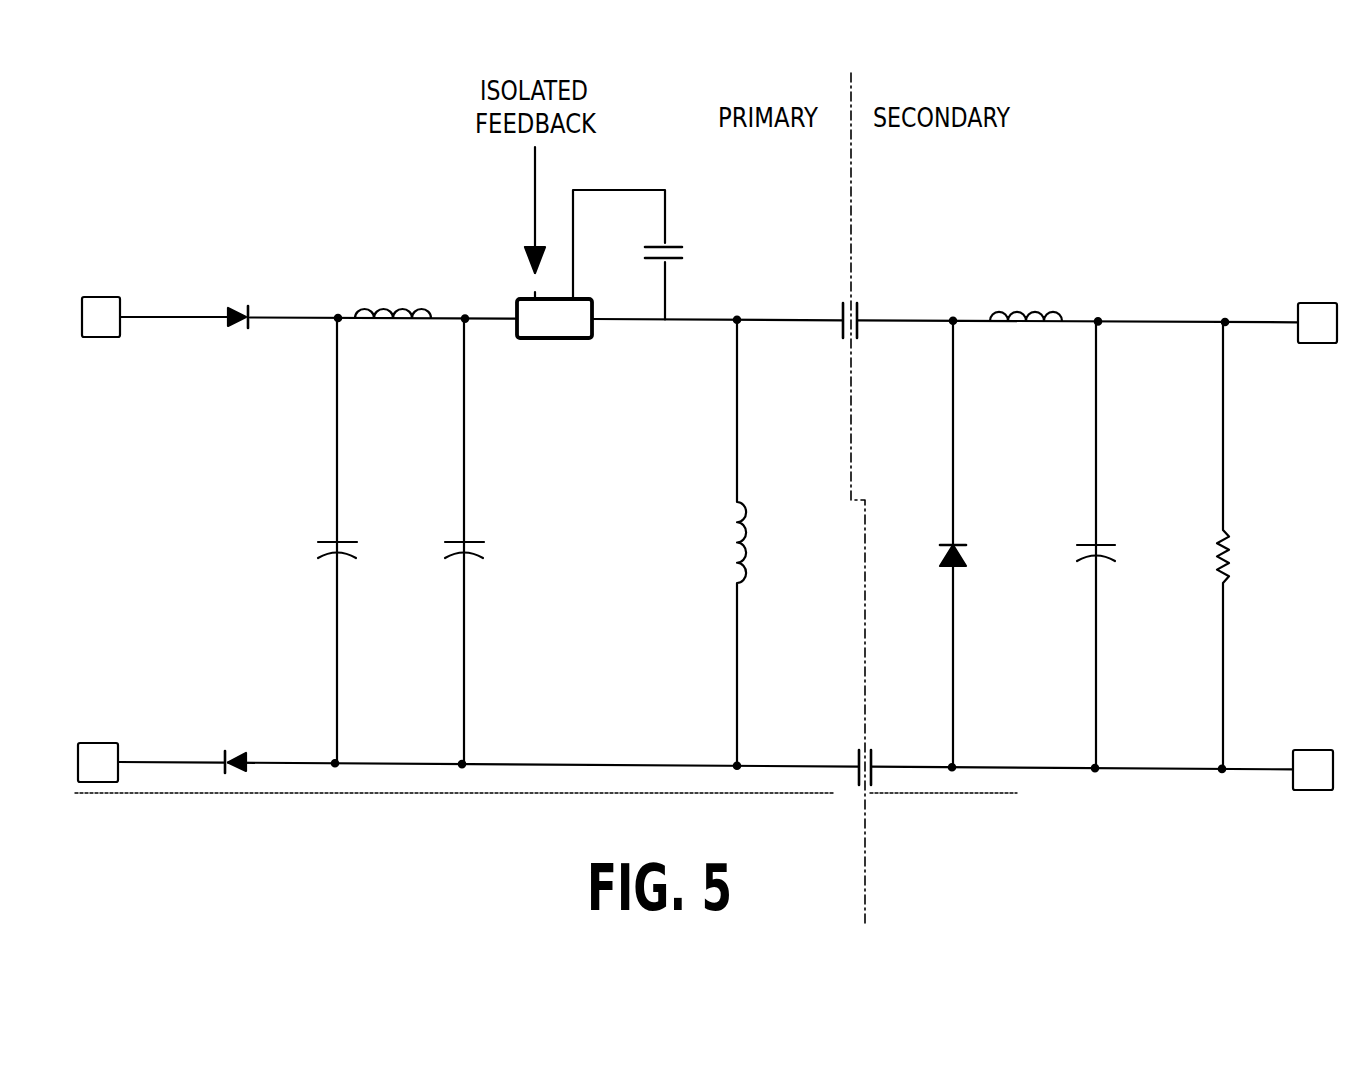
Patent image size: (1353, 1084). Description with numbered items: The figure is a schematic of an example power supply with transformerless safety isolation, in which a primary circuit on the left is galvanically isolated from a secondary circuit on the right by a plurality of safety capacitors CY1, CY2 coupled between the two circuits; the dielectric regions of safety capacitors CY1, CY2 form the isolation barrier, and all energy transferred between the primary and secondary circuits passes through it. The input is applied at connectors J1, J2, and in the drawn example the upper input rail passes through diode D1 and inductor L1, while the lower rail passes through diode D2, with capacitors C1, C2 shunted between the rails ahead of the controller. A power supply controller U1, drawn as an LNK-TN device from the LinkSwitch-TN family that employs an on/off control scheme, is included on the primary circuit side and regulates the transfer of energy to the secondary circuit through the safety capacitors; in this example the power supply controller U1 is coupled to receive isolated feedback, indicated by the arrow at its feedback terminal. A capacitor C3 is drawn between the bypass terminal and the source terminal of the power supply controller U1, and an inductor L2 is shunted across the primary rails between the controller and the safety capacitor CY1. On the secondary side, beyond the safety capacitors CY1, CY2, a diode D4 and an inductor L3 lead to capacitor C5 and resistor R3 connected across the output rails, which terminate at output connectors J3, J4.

The input connector J1 is at (115, 302).
The input connector J2 is at (112, 747).
The output connector J3 is at (1306, 307).
The output connector J4 is at (1302, 754).
The diode D1 is at (229, 299).
The diode D2 is at (228, 744).
The diode D4 is at (979, 544).
The inductor L1 is at (393, 294).
The inductor L2 is at (762, 543).
The inductor L3 is at (1026, 296).
The capacitor C1 is at (312, 540).
The capacitor C2 is at (447, 541).
The capacitor C3 is at (654, 255).
The capacitor C5 is at (1123, 544).
The safety capacitor CY1 is at (855, 304).
The safety capacitor CY2 is at (869, 751).
The resistor R3 is at (1247, 545).
The power supply controller U1 is at (555, 348).